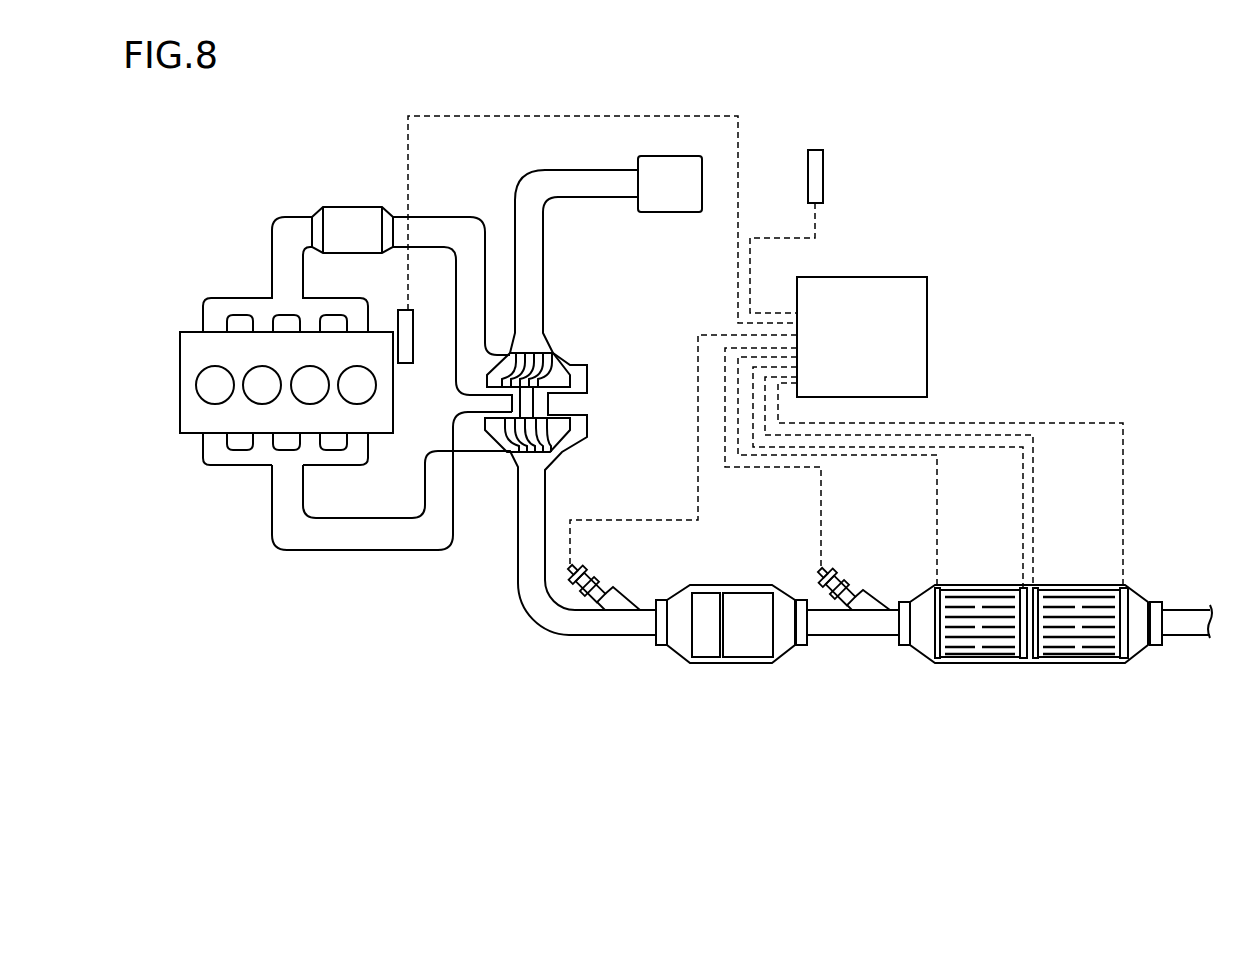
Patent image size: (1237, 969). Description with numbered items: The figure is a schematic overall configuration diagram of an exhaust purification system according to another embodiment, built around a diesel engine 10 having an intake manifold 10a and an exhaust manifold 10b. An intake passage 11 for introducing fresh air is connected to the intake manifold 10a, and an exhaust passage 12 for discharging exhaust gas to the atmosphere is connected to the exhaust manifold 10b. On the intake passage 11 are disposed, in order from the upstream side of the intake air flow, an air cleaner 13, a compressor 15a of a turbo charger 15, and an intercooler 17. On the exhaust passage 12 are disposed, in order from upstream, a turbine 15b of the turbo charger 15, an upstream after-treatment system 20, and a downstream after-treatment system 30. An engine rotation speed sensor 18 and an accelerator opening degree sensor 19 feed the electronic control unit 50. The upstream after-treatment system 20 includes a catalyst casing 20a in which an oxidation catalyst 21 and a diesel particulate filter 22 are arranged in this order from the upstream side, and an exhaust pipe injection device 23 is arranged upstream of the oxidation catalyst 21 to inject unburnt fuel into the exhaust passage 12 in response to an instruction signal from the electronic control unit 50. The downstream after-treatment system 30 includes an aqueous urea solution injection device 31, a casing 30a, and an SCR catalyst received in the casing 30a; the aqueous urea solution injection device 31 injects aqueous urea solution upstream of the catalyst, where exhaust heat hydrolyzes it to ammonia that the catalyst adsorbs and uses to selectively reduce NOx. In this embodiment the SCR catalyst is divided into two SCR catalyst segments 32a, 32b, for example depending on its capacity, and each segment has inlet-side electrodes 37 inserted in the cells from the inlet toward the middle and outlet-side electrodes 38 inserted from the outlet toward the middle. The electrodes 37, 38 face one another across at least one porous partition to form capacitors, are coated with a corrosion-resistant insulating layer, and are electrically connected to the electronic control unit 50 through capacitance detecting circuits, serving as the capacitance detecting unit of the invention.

The diesel engine 10 is at (314, 369).
The intake manifold 10a is at (240, 298).
The exhaust manifold 10b is at (238, 466).
The intake passage 11 is at (439, 216).
The exhaust passage 12 is at (349, 552).
The air cleaner 13 is at (684, 199).
The turbo charger 15 is at (573, 464).
The compressor 15a is at (554, 370).
The turbine 15b is at (548, 444).
The intercooler 17 is at (364, 244).
The engine rotation speed sensor 18 is at (398, 313).
The accelerator opening degree sensor 19 is at (823, 168).
The upstream after-treatment system 20 is at (777, 648).
The catalyst casing 20a is at (710, 664).
The oxidation catalyst 21 is at (703, 593).
The diesel particulate filter 22 is at (744, 593).
The exhaust pipe injection device 23 is at (601, 580).
The downstream after-treatment system 30 is at (1049, 644).
The casing 30a is at (925, 664).
The aqueous urea solution injection device 31 is at (836, 570).
The SCR catalyst segment 32a is at (971, 588).
The SCR catalyst segment 32b is at (1071, 588).
The inlet-side electrodes 37 is at (932, 584).
The outlet-side electrodes 38 is at (1128, 586).
The electronic control unit 50 is at (876, 374).